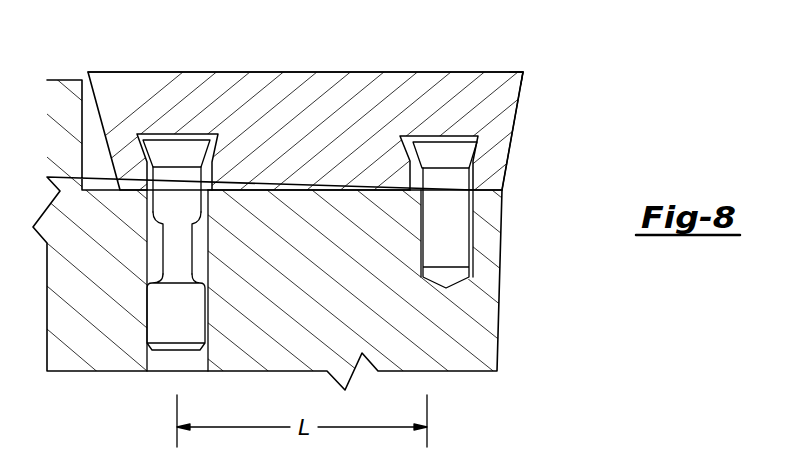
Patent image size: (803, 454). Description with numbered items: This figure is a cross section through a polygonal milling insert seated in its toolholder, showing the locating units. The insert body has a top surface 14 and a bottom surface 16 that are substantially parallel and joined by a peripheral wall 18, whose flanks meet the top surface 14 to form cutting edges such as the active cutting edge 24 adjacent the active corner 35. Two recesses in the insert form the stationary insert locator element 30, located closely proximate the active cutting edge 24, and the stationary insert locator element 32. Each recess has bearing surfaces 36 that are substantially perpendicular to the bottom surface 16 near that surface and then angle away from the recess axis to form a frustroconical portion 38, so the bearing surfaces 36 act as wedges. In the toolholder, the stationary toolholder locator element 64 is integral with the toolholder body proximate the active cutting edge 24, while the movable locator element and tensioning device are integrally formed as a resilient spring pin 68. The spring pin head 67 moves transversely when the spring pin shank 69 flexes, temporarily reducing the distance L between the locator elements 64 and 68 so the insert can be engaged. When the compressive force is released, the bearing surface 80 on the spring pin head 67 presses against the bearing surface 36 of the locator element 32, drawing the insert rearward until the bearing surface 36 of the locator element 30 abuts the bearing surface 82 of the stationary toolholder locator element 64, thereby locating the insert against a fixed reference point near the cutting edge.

The top surface 14 is at (345, 97).
The bottom surface 16 is at (485, 195).
The peripheral wall 18 is at (513, 130).
The cutting edge 24 is at (524, 73).
The stationary insert locator element 30 is at (445, 162).
The stationary insert locator element 32 is at (149, 192).
The corner 35 is at (503, 72).
The bearing surface 36 is at (406, 136).
The frustroconical portion 38 is at (211, 134).
The stationary toolholder locator element 64 is at (454, 247).
The spring pin head 67 is at (156, 163).
The spring pin 68 is at (185, 325).
The spring pin shank 69 is at (185, 257).
The bearing surface 80 is at (157, 146).
The bearing surface 82 is at (453, 152).